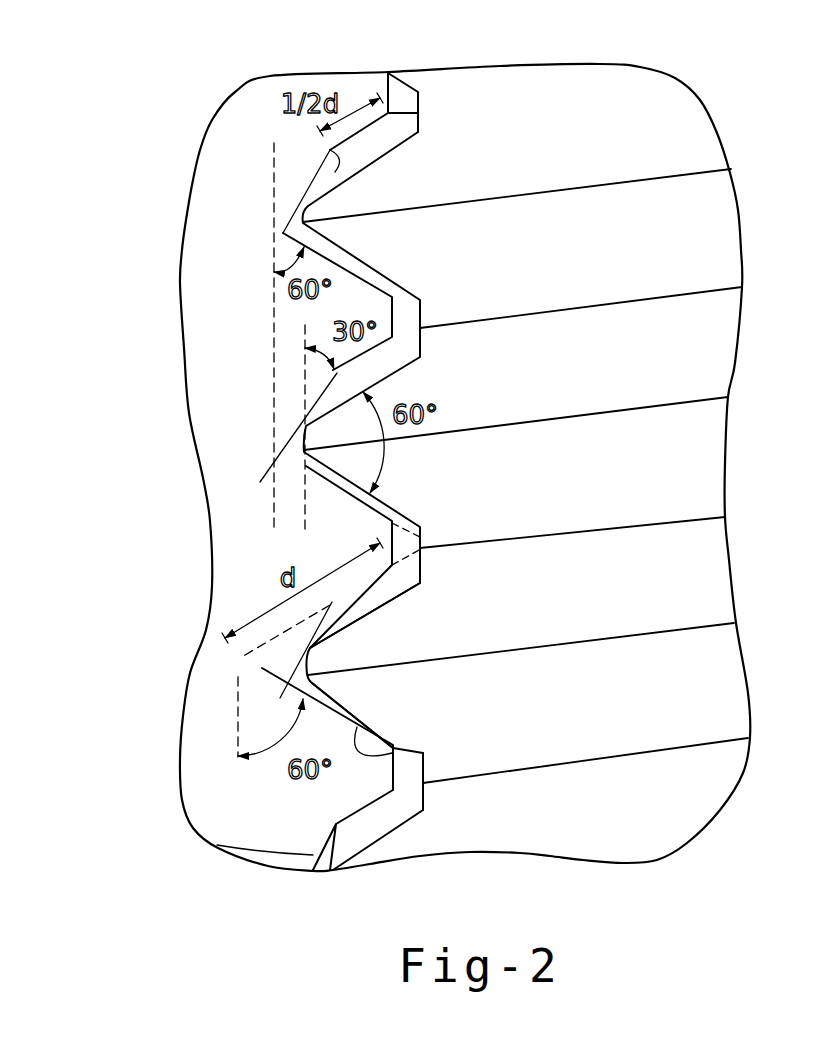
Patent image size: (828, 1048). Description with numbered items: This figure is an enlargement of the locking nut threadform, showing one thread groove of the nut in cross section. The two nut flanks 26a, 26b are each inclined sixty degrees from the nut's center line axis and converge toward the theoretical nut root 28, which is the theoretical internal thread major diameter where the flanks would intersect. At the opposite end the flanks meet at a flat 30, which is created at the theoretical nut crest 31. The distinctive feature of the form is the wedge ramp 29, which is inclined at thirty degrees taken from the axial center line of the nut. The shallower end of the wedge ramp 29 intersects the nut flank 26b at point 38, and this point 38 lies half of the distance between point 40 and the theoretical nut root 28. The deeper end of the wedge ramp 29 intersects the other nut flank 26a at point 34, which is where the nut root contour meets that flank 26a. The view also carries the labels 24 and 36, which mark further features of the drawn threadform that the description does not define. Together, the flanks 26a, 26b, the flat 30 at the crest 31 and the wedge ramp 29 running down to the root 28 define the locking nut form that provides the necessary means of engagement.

The helical thread 24 is at (303, 212).
The nut flank 26a is at (400, 746).
The nut flank 26b is at (357, 590).
The nut root 28 is at (265, 643).
The wedge ramp 29 is at (217, 845).
The flat 30 is at (423, 810).
The theoretical nut crest 31 is at (423, 540).
The point 34 is at (260, 482).
The flank reference line 36 is at (262, 668).
The point 38 is at (283, 233).
The point 40 is at (420, 114).